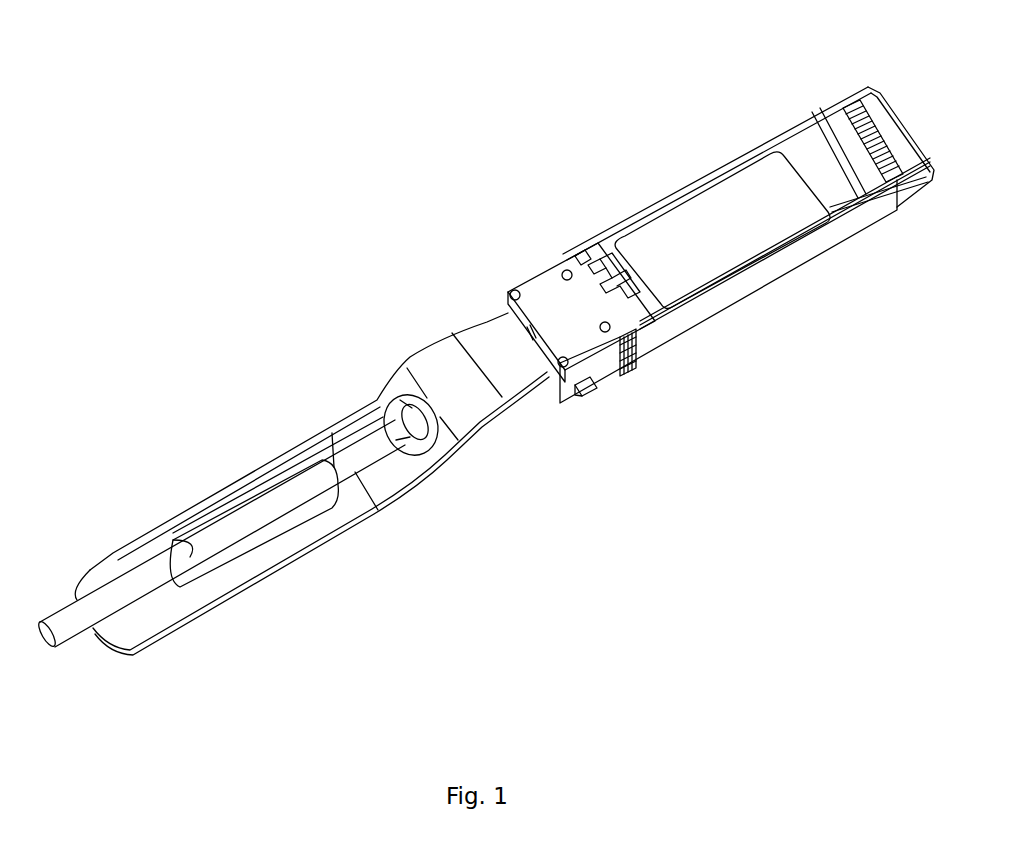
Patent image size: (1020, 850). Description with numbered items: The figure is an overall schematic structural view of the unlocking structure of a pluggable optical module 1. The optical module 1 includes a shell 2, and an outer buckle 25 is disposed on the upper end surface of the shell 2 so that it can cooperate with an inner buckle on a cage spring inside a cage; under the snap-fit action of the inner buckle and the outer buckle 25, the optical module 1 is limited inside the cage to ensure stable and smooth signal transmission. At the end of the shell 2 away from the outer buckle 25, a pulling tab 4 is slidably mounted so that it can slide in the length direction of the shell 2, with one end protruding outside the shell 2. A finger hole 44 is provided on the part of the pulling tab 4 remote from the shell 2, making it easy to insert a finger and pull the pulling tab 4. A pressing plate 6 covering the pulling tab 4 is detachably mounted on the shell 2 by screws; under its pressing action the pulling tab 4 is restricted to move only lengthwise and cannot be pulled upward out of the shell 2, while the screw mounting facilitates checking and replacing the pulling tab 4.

The optical module 1 is at (629, 188).
The shell 2 is at (598, 372).
The outer buckle 25 is at (633, 273).
The pressing plate 6 is at (540, 300).
The pulling tab 4 is at (357, 503).
The finger hole 44 is at (264, 543).